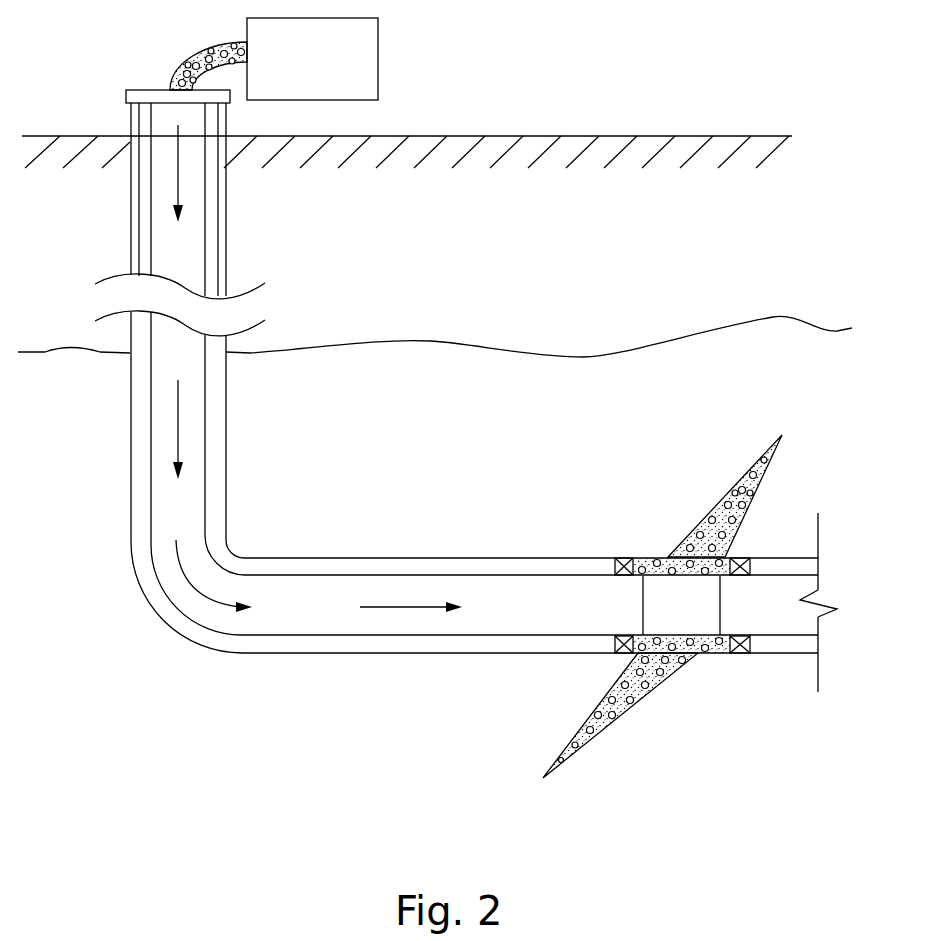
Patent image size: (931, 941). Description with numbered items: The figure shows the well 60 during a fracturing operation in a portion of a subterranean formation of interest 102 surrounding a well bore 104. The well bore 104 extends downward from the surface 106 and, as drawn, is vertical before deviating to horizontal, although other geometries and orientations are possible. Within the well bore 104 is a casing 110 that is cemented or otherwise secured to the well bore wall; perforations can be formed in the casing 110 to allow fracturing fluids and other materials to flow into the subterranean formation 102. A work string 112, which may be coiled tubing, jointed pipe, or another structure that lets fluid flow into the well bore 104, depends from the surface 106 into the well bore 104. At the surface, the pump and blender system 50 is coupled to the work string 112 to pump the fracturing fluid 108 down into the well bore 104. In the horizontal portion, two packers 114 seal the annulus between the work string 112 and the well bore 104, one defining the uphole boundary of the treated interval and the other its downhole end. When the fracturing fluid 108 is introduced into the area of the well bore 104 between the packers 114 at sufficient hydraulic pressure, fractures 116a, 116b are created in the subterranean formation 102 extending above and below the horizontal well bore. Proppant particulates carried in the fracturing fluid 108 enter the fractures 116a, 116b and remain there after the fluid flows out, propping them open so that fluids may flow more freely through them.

The pump and blender system 50 is at (323, 69).
The fracturing fluid 108 is at (192, 55).
The surface 106 is at (570, 135).
The well 60 is at (141, 645).
The casing 110 is at (140, 256).
The well bore 104 is at (145, 219).
The work string 112 is at (150, 474).
The subterranean formation 102 is at (488, 386).
The packers 114 is at (631, 556).
The fracture 116a is at (705, 494).
The fracture 116b is at (652, 695).